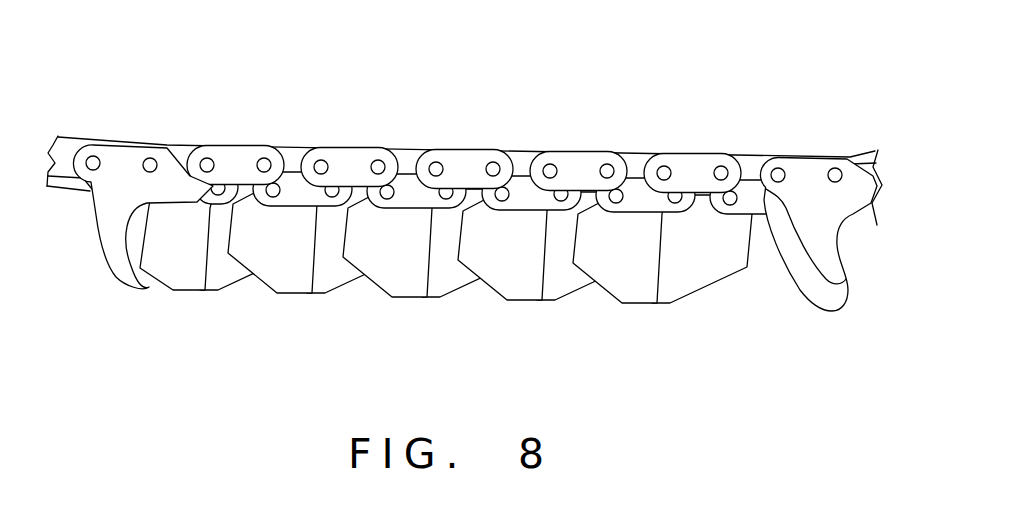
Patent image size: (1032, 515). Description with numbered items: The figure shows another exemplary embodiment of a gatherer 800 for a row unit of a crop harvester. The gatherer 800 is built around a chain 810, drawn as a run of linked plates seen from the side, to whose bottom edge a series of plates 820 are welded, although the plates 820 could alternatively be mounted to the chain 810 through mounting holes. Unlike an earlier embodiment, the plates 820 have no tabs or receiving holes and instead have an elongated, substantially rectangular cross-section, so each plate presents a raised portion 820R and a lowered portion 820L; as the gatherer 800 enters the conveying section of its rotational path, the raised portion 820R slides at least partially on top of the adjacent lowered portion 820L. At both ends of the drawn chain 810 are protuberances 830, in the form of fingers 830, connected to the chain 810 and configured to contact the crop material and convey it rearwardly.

The gatherer 800 is at (455, 216).
The chain 810 is at (230, 143).
The plates 820 is at (457, 300).
The raised portion 820R is at (523, 270).
The lowered portion 820L is at (571, 282).
The protuberances 830 is at (112, 242).